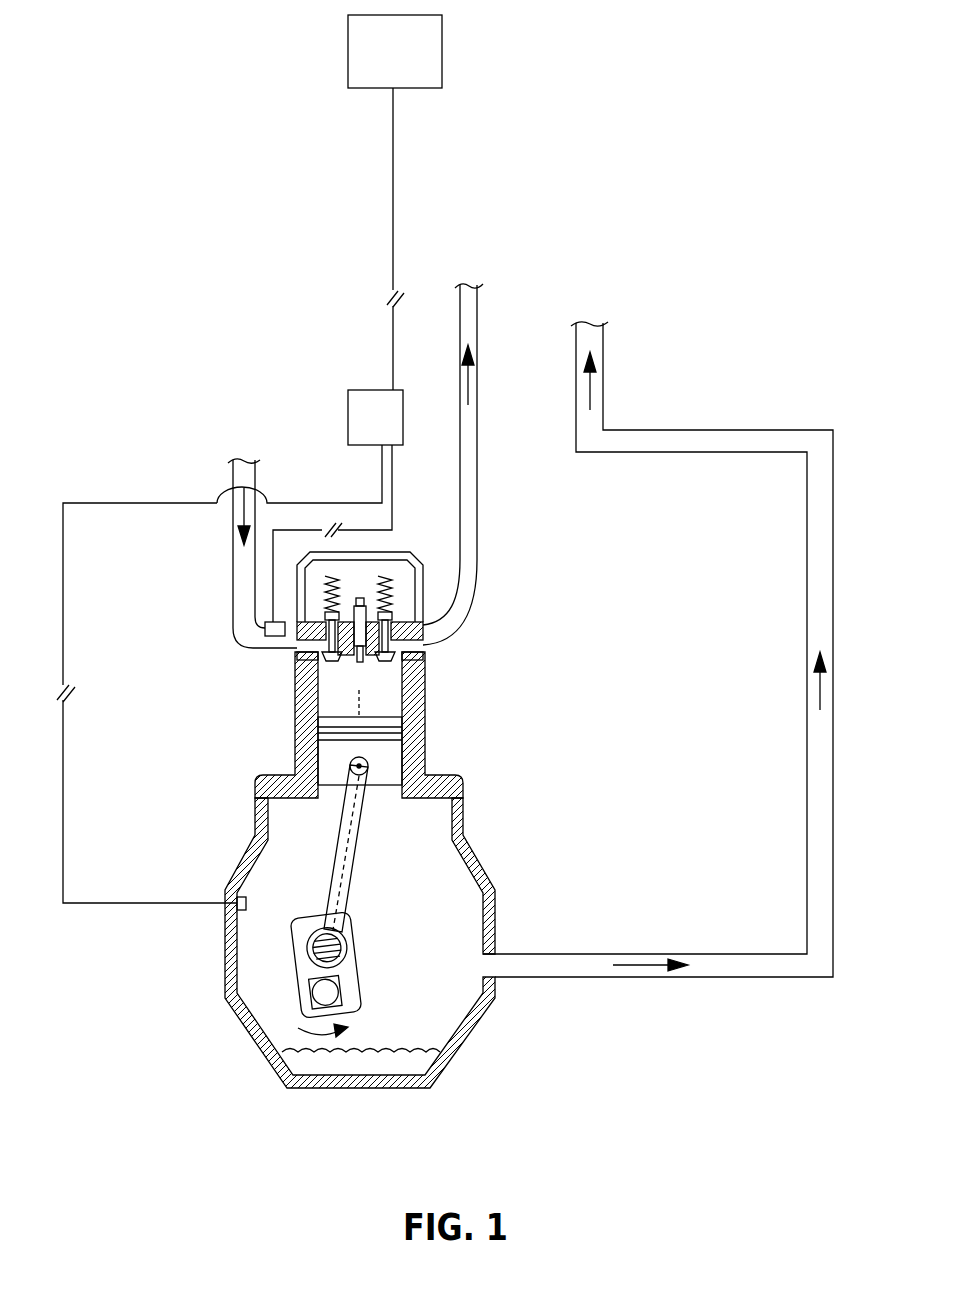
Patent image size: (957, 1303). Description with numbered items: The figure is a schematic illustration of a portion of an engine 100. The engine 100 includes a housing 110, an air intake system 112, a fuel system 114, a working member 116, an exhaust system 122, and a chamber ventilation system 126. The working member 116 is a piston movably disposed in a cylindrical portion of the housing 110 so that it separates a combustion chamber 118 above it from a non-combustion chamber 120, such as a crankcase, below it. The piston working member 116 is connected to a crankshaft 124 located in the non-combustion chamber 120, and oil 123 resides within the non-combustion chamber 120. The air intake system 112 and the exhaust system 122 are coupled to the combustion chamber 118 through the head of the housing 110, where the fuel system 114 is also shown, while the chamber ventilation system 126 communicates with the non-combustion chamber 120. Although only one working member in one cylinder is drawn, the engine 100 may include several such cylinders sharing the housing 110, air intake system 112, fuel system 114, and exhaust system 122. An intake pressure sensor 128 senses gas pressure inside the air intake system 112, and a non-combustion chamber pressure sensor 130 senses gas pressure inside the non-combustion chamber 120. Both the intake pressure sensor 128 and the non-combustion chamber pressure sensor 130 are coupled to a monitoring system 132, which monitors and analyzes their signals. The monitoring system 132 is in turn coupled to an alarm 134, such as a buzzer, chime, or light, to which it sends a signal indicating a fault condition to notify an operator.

The engine 100 is at (826, 70).
The housing 110 is at (443, 788).
The air intake system 112 is at (288, 652).
The fuel system 114 is at (361, 598).
The working member 116 is at (335, 764).
The combustion chamber 118 is at (390, 703).
The non-combustion chamber 120 is at (270, 947).
The exhaust system 122 is at (425, 640).
The oil 123 is at (415, 1063).
The crankshaft 124 is at (322, 1000).
The chamber ventilation system 126 is at (593, 967).
The intake pressure sensor 128 is at (267, 628).
The non-combustion chamber pressure sensor 130 is at (232, 890).
The monitoring system 132 is at (348, 425).
The alarm 134 is at (432, 60).